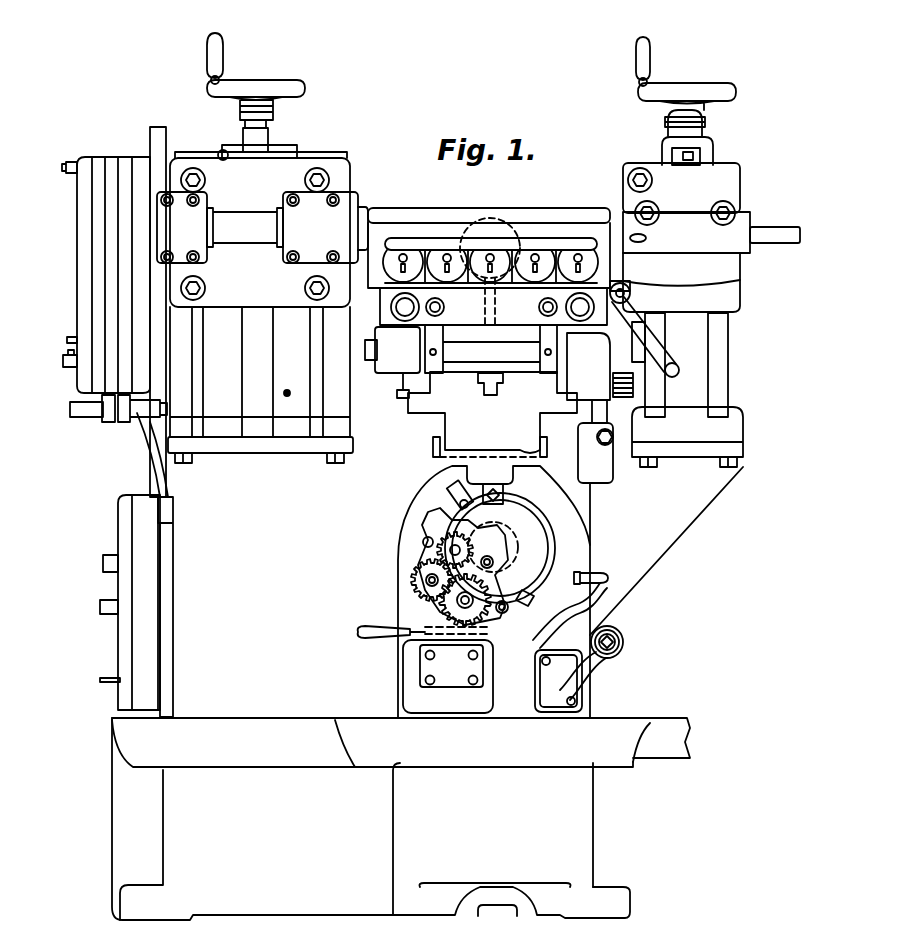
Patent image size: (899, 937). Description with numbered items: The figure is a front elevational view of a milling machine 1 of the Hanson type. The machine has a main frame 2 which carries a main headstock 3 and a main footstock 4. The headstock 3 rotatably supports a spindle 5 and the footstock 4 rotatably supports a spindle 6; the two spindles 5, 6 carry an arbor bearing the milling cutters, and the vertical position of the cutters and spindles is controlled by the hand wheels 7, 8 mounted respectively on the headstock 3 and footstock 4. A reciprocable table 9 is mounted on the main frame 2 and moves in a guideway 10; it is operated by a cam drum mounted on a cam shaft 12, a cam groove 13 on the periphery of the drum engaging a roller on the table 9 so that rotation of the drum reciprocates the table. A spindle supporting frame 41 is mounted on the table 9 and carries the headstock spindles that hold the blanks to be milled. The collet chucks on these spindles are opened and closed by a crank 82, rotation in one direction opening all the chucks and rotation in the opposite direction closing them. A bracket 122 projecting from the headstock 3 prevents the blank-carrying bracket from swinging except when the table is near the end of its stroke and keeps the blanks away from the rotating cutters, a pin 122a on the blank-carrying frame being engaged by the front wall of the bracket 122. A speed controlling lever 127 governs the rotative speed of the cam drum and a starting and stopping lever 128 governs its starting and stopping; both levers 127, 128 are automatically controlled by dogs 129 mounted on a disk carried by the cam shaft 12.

The milling machine 1 is at (620, 838).
The main frame 2 is at (592, 787).
The main headstock 3 is at (348, 98).
The main footstock 4 is at (738, 124).
The spindle 5 is at (249, 222).
The spindle 6 is at (763, 228).
The hand wheel 7 is at (288, 87).
The hand wheel 8 is at (712, 86).
The reciprocable table 9 is at (453, 418).
The guideway 10 is at (448, 470).
The cam shaft 12 is at (520, 546).
The cam groove 13 is at (547, 513).
The spindle supporting frame 41 is at (705, 281).
The crank 82 is at (660, 352).
The bracket 122 is at (363, 200).
The pin 122a is at (363, 212).
The speed controlling lever 127 is at (372, 630).
The starting and stopping lever 128 is at (573, 573).
The dogs 129 is at (452, 498).